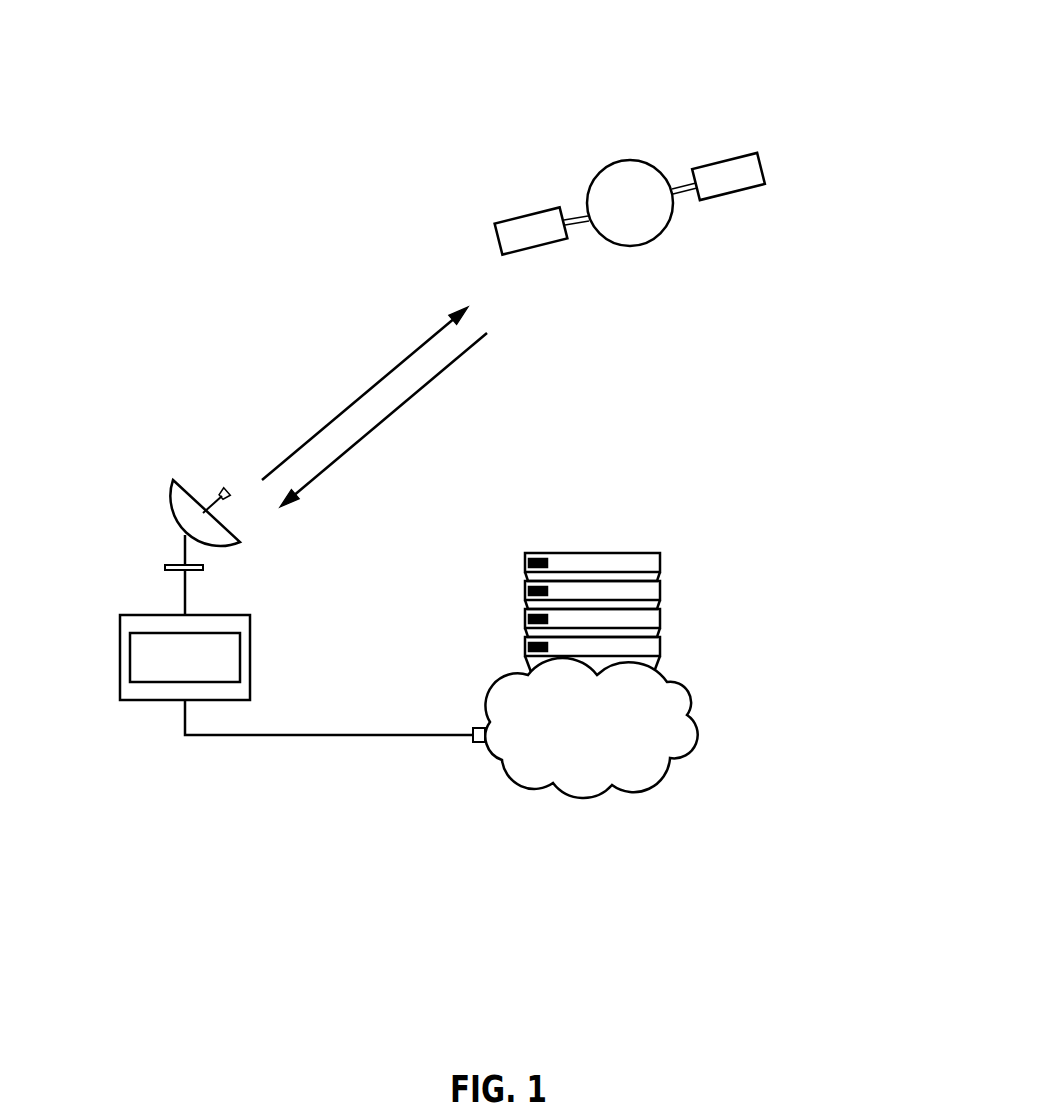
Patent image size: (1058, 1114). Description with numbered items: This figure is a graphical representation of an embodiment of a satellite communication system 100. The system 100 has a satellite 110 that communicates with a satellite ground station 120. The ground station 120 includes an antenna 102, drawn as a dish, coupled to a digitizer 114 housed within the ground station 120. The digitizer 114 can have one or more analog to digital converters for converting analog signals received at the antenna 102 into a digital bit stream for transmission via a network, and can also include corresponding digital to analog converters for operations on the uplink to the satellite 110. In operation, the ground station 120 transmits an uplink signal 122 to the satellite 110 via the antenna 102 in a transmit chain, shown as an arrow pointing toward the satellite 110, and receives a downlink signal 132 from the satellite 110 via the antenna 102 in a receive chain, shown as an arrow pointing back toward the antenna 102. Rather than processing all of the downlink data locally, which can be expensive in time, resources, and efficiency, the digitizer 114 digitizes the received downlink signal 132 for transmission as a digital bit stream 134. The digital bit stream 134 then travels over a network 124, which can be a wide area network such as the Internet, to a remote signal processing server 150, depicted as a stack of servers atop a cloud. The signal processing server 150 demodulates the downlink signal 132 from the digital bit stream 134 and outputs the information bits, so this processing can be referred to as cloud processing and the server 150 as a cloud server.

The communication system 100 is at (859, 54).
The satellite 110 is at (617, 178).
The antenna 102 is at (177, 495).
The satellite ground station 120 is at (137, 623).
The digitizer 114 is at (130, 660).
The uplink signal 122 is at (302, 445).
The downlink signal 132 is at (342, 455).
The network 124 is at (373, 732).
The digital bit stream 134 is at (477, 728).
The signal processing server 150 is at (643, 563).